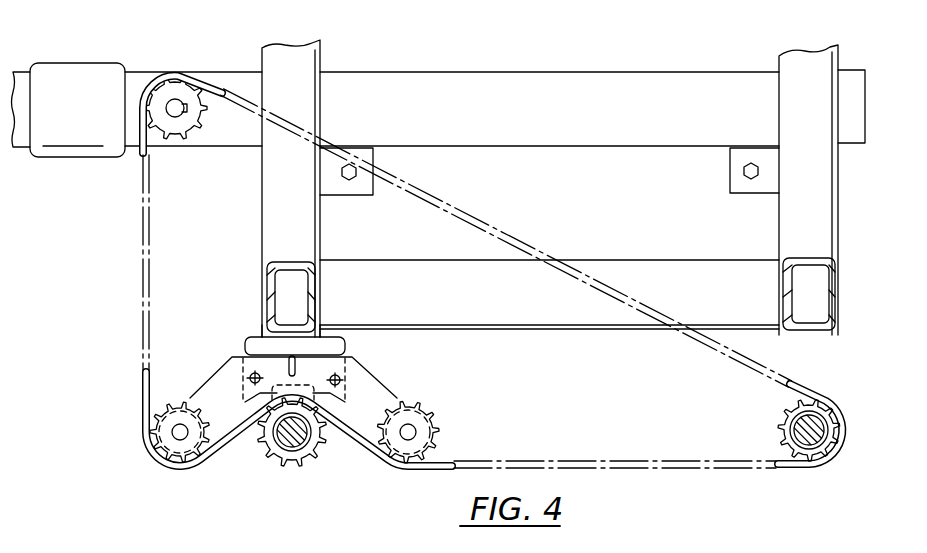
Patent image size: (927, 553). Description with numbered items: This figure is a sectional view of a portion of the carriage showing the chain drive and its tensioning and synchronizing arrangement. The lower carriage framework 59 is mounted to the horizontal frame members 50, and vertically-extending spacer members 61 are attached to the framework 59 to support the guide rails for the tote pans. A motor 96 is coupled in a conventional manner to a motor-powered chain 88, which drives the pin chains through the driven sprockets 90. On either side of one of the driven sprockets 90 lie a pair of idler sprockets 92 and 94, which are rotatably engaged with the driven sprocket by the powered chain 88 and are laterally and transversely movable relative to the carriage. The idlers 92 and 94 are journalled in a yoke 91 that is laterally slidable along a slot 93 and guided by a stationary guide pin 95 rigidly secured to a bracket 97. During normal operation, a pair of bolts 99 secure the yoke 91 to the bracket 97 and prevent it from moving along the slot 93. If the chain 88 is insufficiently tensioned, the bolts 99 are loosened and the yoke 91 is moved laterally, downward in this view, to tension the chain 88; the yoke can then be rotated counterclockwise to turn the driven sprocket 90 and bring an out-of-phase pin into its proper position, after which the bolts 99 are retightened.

The horizontal frame members 50 is at (473, 71).
The lower carriage framework 59 is at (840, 217).
The vertically-extending spacer members 61 is at (265, 266).
The motor-powered chain 88 is at (141, 206).
The driven sprockets 90 is at (296, 470).
The yoke 91 is at (368, 368).
The idler sprocket 92 is at (188, 403).
The slot 93 is at (300, 362).
The idler sprocket 94 is at (437, 418).
The stationary guide pin 95 is at (286, 365).
The motor 96 is at (91, 63).
The bracket 97 is at (258, 336).
The bolts 99 is at (250, 377).